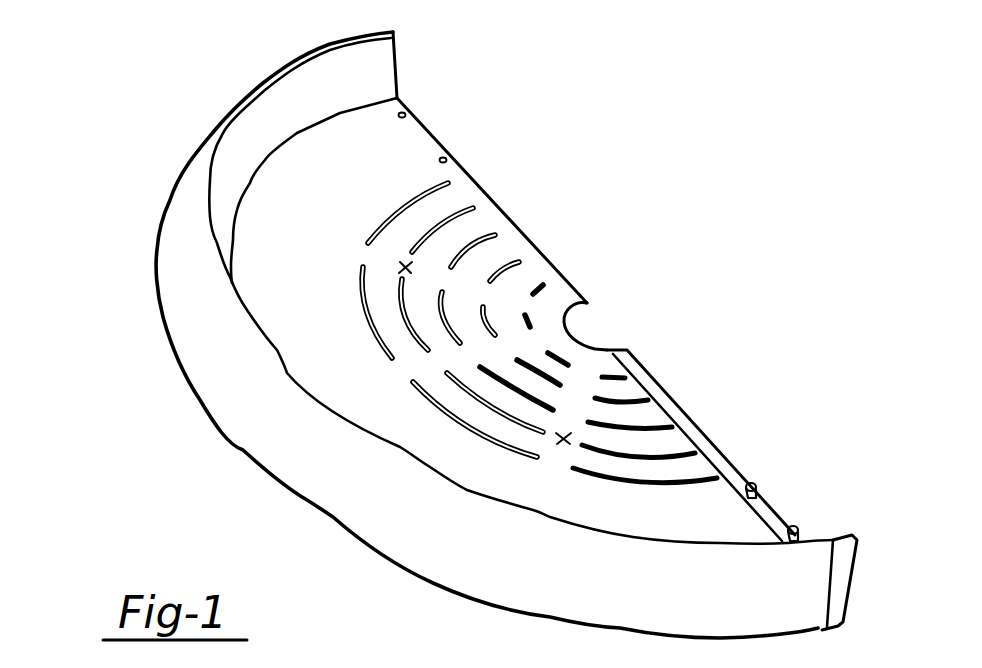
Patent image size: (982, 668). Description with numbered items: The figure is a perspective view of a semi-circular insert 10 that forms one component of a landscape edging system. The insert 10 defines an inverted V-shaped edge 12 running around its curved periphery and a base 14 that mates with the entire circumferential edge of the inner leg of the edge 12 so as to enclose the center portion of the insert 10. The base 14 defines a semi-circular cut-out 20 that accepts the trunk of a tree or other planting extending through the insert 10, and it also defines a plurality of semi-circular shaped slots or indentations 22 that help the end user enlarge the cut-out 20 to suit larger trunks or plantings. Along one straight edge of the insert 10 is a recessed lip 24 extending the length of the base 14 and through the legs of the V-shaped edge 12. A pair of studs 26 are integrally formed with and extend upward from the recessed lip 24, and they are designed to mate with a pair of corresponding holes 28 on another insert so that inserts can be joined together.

The semi-circular insert 10 is at (643, 196).
The inverted V-shaped edge 12 is at (277, 98).
The base 14 is at (315, 330).
The semi-circular cut-out 20 is at (568, 333).
The semi-circular shaped slots 22 is at (410, 212).
The recessed lip 24 is at (659, 386).
The studs 26 is at (758, 492).
The holes 28 is at (448, 158).